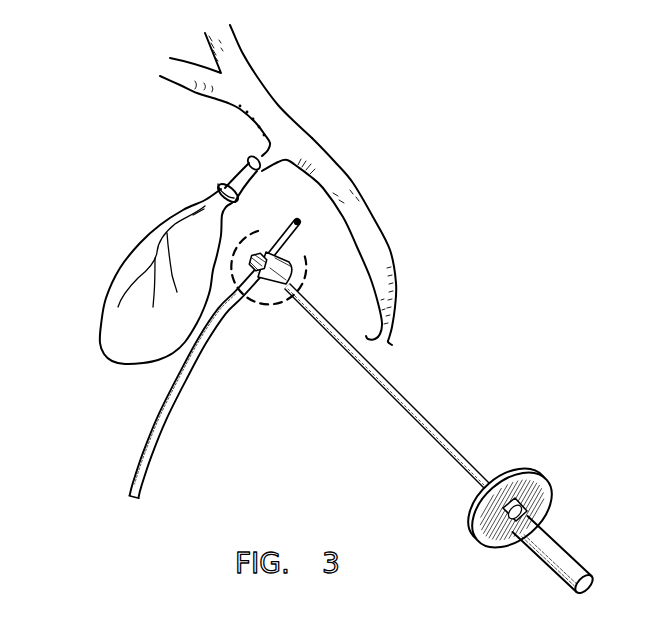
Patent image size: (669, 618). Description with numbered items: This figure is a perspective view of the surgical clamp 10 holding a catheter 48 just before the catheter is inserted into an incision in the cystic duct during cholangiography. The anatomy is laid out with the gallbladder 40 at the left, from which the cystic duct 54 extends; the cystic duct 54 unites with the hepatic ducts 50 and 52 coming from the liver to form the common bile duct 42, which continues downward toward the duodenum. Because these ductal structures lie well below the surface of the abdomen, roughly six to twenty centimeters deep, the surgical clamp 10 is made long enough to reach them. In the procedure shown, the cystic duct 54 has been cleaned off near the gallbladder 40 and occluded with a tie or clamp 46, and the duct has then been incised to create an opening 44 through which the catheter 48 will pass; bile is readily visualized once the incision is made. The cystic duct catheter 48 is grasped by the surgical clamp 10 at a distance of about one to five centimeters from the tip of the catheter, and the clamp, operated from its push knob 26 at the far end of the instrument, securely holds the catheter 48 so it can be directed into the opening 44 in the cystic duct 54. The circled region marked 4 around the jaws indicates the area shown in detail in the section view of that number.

The surgical clamp 10 is at (392, 410).
The push knob 26 is at (565, 552).
The gallbladder 40 is at (115, 268).
The common bile duct 42 is at (288, 143).
The opening 44 is at (247, 163).
The tie or clamp 46 is at (216, 192).
The catheter 48 is at (199, 353).
The hepatic duct 50 is at (197, 76).
The hepatic duct 52 is at (227, 58).
The cystic duct 54 is at (239, 169).
The section line 4- 4 is at (270, 226).